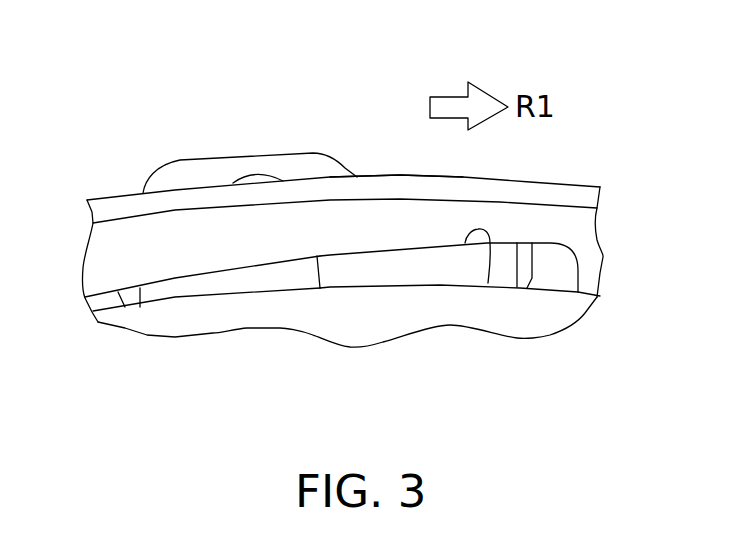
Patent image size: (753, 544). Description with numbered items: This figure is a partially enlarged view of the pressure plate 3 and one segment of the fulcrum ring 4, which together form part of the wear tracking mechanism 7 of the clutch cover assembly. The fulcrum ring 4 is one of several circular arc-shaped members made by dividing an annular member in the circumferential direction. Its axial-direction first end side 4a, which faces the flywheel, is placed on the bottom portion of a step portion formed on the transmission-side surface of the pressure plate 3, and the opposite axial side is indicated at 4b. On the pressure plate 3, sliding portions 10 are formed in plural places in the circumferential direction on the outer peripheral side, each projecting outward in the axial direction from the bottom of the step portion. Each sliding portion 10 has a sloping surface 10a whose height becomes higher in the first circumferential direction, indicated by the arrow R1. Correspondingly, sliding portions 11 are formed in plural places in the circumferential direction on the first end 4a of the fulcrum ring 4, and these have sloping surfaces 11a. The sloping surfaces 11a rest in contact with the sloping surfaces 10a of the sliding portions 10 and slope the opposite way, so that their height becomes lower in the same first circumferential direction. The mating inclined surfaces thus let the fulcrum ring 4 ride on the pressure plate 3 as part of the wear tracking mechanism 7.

The pressure plate 3 is at (258, 150).
The fulcrum ring 4 is at (378, 225).
The axial-direction first end side of the fulcrum ring 4a is at (585, 295).
The upper flange of body panel 4b is at (563, 193).
The wear tracking mechanism 7 is at (385, 163).
The sliding portion 10 is at (383, 293).
The sloping surface 10a is at (488, 283).
The sliding portion 11 is at (207, 338).
The sloping surface 11a is at (317, 288).